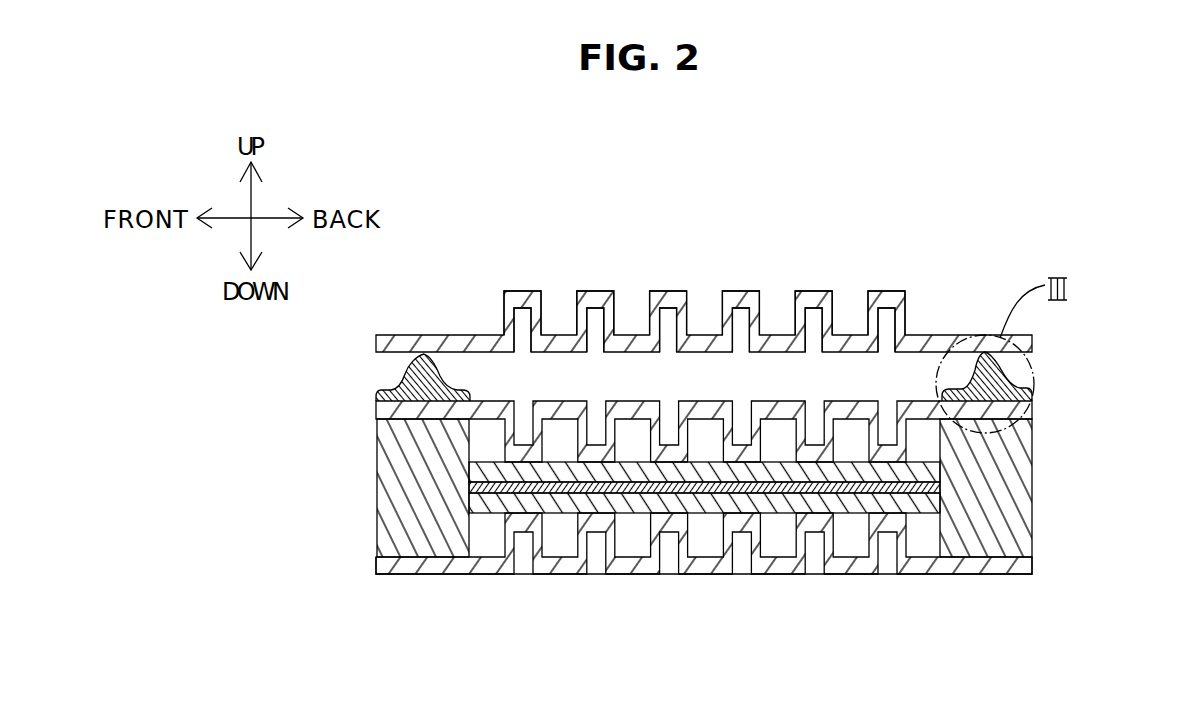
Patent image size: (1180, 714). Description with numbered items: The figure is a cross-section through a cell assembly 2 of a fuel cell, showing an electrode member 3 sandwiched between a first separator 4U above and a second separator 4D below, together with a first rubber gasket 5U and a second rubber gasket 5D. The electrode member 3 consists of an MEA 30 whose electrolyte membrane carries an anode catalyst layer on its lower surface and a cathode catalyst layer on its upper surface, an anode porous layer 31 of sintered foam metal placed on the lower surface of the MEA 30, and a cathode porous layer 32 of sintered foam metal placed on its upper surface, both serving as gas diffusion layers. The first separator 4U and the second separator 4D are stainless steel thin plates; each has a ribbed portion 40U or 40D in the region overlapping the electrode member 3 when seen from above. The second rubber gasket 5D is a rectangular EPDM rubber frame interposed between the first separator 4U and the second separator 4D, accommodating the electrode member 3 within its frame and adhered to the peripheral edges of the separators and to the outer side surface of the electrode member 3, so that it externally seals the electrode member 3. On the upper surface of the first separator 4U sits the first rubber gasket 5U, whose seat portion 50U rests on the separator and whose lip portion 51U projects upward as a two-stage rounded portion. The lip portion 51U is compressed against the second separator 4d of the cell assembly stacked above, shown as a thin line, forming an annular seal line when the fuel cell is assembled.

The cell assembly 2 is at (370, 387).
The electrode member 3 is at (778, 501).
The MEA 30 is at (704, 501).
The anode porous layer 31 is at (619, 490).
The cathode porous layer 32 is at (637, 473).
The first separator 4U is at (785, 410).
The second separator 4D is at (858, 570).
The second separator of a different cell assembly 4d is at (809, 295).
The ribbed portion 40U is at (643, 410).
The ribbed portion 40D is at (720, 572).
The first rubber gasket 5U is at (776, 366).
The seat portion 50U is at (1022, 389).
The lip portion 51U is at (1000, 368).
The second rubber gasket 5D is at (388, 525).